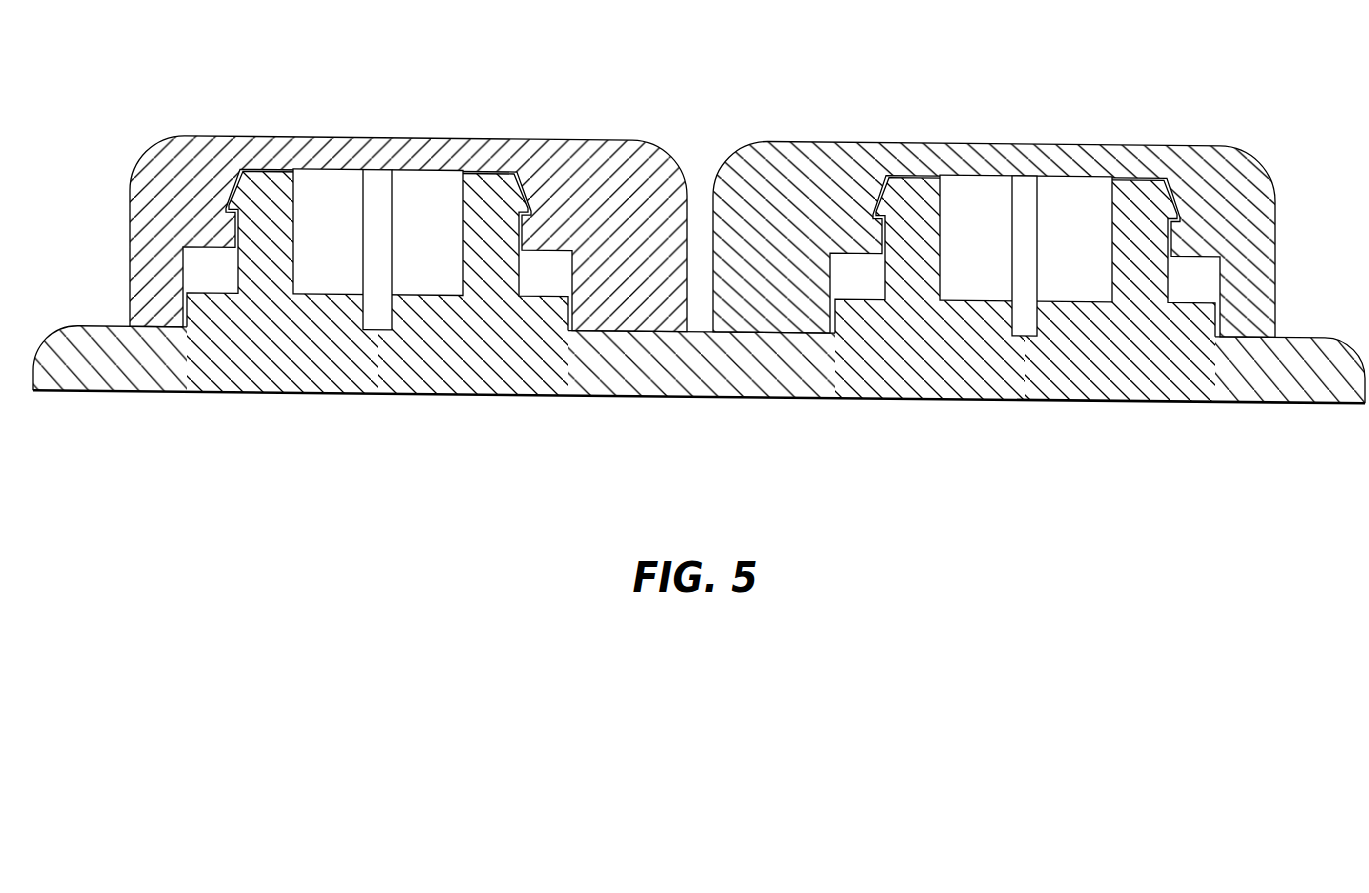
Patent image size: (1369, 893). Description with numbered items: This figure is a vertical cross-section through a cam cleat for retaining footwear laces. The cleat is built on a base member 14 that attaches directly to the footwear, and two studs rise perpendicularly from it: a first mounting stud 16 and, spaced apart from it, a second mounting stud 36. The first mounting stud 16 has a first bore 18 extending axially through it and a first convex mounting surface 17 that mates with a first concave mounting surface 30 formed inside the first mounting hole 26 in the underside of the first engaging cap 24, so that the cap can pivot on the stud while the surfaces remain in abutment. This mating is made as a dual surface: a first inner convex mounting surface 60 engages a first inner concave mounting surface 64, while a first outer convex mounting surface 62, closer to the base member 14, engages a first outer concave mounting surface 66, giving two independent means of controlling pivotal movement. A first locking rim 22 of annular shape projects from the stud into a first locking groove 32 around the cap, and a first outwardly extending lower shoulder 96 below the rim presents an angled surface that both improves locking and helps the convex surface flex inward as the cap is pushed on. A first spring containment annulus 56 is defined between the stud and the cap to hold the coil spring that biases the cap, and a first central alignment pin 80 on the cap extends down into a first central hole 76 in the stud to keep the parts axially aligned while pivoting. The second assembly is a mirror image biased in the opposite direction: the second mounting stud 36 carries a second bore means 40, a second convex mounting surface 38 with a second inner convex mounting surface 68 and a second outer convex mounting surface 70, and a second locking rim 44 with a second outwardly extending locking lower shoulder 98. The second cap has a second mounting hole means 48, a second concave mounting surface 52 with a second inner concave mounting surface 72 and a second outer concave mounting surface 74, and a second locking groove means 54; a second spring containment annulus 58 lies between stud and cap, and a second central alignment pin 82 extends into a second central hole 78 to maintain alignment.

The base member 14 is at (690, 376).
The first mounting stud 16 is at (487, 190).
The first convex mounting surface 17 is at (527, 230).
The first bore 18 is at (413, 239).
The first locking rim 22 is at (252, 175).
The first engaging cap 24 is at (620, 203).
The first mounting hole 26 is at (340, 182).
The first concave mounting surface 30 is at (224, 237).
The first locking groove 32 is at (230, 213).
The second mounting stud 36 is at (1125, 183).
The second convex mounting surface 38 is at (1180, 228).
The second bore means 40 is at (1058, 235).
The second locking rim 44 is at (884, 213).
The second mounting hole means 48 is at (997, 185).
The second concave mounting surface 52 is at (874, 240).
The second locking groove means 54 is at (1172, 213).
The first spring containment annulus 56 is at (197, 283).
The second spring containment annulus 58 is at (843, 296).
The first inner convex mounting surface 60 is at (242, 250).
The first outer convex mounting surface 62 is at (187, 312).
The first inner concave mounting surface 64 is at (230, 217).
The first outer concave mounting surface 66 is at (178, 302).
The second inner convex mounting surface 68 is at (887, 192).
The second outer convex mounting surface 70 is at (843, 333).
The second inner concave mounting surface 72 is at (873, 235).
The second outer concave mounting surface 74 is at (1222, 313).
The first central hole 76 is at (378, 333).
The second central hole 78 is at (1025, 337).
The first central alignment pin 80 is at (378, 182).
The second central alignment pin 82 is at (1028, 185).
The first outwardly extending lower shoulder 96 is at (248, 188).
The second outwardly extending locking lower shoulder 98 is at (877, 222).